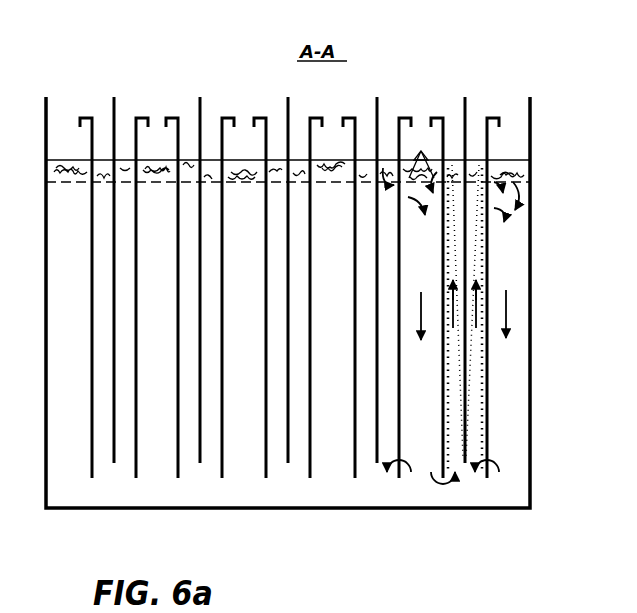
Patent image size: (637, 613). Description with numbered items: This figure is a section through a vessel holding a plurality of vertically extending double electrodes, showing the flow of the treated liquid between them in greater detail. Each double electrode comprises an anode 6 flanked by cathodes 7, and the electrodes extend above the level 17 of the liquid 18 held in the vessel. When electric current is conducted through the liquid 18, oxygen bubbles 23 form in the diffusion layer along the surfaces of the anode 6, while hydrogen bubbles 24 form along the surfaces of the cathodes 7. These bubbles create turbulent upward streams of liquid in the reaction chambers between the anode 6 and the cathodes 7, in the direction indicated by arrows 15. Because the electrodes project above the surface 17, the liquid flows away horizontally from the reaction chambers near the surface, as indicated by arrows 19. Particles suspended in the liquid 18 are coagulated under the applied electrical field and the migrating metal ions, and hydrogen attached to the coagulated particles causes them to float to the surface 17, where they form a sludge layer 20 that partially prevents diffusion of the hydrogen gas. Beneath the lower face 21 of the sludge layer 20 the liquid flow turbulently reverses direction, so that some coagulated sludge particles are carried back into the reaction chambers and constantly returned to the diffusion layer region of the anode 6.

The liquid level 17 is at (61, 181).
The cathode 7 is at (347, 118).
The anode 6 is at (376, 112).
The arrows 19 is at (421, 151).
The sludge layer 20 is at (520, 167).
The lower face of sludge layer 21 is at (510, 182).
The liquid 18 is at (500, 260).
The arrows 15 is at (475, 319).
The hydrogen bubbles 24 is at (487, 368).
The oxygen bubbles 23 is at (467, 433).